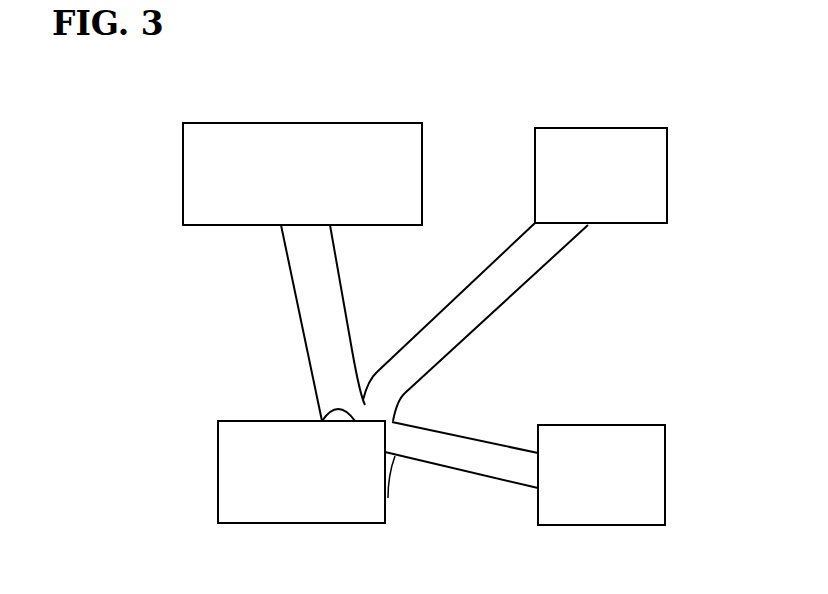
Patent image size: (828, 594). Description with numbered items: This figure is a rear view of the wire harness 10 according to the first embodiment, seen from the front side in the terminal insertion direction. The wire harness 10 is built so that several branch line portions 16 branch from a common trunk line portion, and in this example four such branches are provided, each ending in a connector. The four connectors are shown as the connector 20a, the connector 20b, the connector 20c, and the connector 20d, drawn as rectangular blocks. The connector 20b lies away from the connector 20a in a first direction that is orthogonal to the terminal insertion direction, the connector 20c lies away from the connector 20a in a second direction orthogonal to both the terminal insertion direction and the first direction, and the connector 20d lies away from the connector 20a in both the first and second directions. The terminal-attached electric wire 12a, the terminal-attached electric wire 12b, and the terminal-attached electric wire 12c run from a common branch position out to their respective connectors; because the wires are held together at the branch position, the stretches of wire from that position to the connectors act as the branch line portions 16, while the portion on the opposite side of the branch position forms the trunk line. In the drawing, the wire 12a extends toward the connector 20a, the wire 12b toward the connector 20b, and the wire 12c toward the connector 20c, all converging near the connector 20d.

The wire harness 10 is at (269, 85).
The connector 20a is at (606, 128).
The connector 20b is at (361, 122).
The connector 20c is at (626, 424).
The connector 20d is at (248, 421).
The terminal-attached electric wire 12a is at (478, 310).
The terminal-attached electric wire 12b is at (328, 278).
The terminal-attached electric wire 12c is at (470, 462).
The branch line portion 16 is at (434, 378).